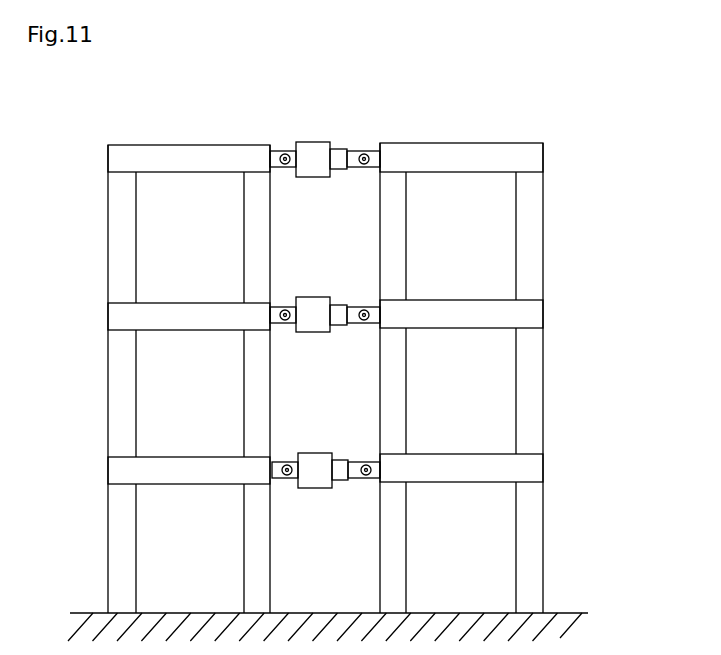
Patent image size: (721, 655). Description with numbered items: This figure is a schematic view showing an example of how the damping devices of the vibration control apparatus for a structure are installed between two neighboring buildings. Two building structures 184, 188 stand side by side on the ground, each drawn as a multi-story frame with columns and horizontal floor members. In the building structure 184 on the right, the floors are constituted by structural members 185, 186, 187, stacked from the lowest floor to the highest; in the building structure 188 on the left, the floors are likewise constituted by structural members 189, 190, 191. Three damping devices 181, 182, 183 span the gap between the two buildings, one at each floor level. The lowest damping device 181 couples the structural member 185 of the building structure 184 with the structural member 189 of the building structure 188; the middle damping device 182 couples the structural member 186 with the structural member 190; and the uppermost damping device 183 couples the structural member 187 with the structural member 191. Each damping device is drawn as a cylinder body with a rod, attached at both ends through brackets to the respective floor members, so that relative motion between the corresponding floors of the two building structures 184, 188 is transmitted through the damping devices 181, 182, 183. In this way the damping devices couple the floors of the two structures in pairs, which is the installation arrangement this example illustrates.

The damping device 181 is at (320, 451).
The damping device 182 is at (315, 296).
The damping device 183 is at (320, 140).
The building structure 184 is at (445, 138).
The structural member 185 is at (530, 467).
The structural member 186 is at (528, 311).
The structural member 187 is at (528, 163).
The building structure 188 is at (193, 144).
The structural member 189 is at (120, 475).
The structural member 190 is at (120, 319).
The structural member 191 is at (116, 163).